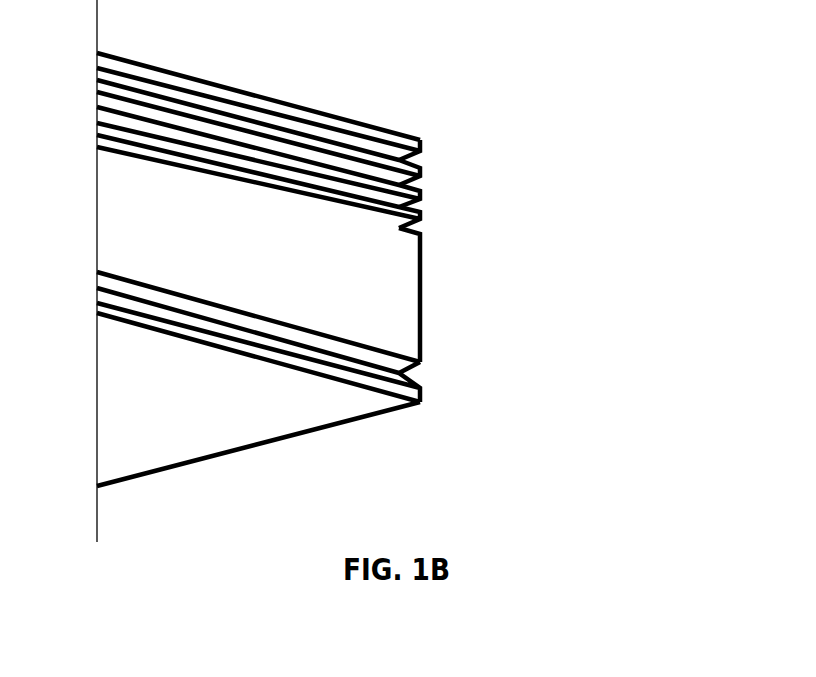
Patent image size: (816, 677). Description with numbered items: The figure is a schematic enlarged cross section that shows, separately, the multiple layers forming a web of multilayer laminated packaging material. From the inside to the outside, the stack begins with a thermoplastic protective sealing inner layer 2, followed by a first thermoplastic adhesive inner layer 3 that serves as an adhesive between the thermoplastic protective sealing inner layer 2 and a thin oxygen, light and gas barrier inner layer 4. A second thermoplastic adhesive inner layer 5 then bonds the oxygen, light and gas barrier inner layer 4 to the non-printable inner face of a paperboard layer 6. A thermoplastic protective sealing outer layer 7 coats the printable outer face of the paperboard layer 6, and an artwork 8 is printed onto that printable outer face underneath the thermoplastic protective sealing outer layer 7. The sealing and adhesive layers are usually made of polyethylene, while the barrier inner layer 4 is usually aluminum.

The thermoplastic protective sealing inner layer 2 is at (418, 147).
The first thermoplastic adhesive inner layer 3 is at (418, 173).
The oxygen, light and gas barrier inner layer 4 is at (420, 202).
The second thermoplastic adhesive inner layer 5 is at (422, 215).
The paperboard layer 6 is at (380, 270).
The thermoplastic protective sealing outer layer 7 is at (365, 402).
The artwork 8 is at (423, 370).